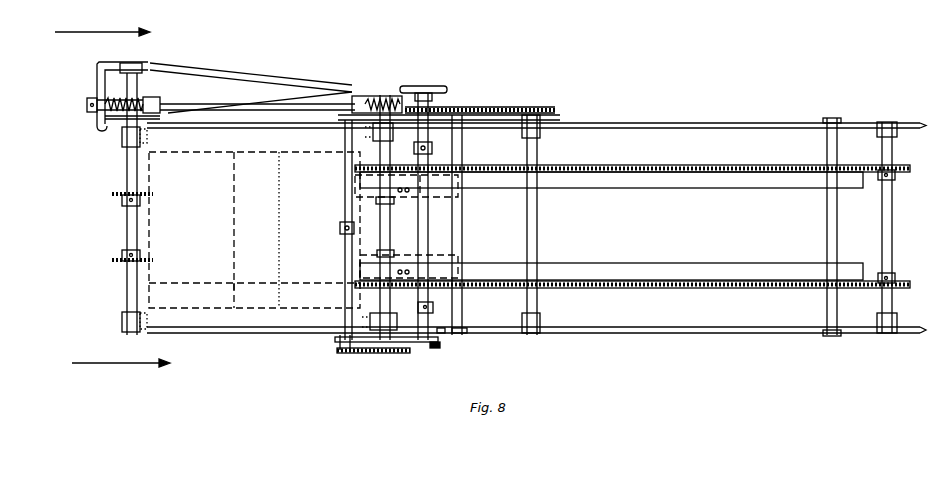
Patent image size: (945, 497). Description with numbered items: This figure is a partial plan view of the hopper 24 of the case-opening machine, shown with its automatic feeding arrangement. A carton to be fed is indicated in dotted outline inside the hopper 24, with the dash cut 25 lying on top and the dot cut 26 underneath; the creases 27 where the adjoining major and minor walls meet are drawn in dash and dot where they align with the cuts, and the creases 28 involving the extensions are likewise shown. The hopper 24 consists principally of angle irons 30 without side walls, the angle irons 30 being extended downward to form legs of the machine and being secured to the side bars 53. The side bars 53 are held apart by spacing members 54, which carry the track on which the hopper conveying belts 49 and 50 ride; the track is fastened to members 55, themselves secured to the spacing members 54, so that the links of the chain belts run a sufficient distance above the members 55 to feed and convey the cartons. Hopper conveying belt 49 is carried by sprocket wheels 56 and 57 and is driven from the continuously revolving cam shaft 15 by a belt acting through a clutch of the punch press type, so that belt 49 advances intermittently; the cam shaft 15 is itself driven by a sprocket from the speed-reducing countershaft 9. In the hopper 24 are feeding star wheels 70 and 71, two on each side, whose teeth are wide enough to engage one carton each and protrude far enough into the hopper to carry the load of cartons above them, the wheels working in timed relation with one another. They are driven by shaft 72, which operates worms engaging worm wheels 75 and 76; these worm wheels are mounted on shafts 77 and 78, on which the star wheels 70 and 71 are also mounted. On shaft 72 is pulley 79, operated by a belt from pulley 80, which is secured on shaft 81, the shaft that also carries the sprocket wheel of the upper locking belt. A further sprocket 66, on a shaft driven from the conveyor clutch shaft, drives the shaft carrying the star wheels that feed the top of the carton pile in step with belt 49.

The shaft 9 is at (112, 201).
The cam shaft 15 is at (540, 238).
The hopper 24 is at (254, 230).
The dash cut 25 is at (234, 293).
The dot cut 26 is at (279, 291).
The creases 27 is at (279, 216).
The creases 28 is at (308, 178).
The angle iron 30 is at (148, 138).
The hopper conveying belt 49 is at (620, 166).
The hopper conveying belt 50 is at (651, 289).
The side bars 53 is at (655, 123).
The spacing members 54 is at (460, 240).
The members 55 is at (702, 263).
The sprocket wheel 56 is at (392, 173).
The sprocket wheel 57 is at (393, 286).
The sprocket 66 is at (99, 124).
The feeding star wheel 70 is at (115, 197).
The feeding star wheel 71 is at (115, 258).
The shaft 72 is at (190, 99).
The worm wheel 75 is at (402, 96).
The worm wheel 76 is at (118, 103).
The shaft 77 is at (126, 170).
The shaft 78 is at (388, 240).
The pulley 79 is at (340, 228).
The pulley 80 is at (444, 86).
The shaft 81 is at (427, 237).